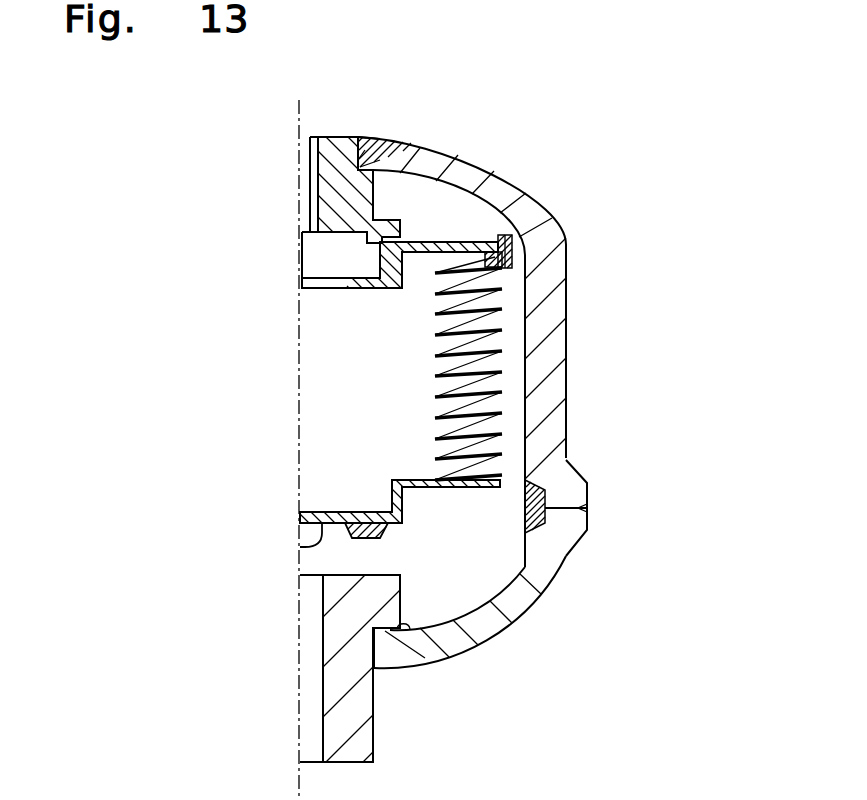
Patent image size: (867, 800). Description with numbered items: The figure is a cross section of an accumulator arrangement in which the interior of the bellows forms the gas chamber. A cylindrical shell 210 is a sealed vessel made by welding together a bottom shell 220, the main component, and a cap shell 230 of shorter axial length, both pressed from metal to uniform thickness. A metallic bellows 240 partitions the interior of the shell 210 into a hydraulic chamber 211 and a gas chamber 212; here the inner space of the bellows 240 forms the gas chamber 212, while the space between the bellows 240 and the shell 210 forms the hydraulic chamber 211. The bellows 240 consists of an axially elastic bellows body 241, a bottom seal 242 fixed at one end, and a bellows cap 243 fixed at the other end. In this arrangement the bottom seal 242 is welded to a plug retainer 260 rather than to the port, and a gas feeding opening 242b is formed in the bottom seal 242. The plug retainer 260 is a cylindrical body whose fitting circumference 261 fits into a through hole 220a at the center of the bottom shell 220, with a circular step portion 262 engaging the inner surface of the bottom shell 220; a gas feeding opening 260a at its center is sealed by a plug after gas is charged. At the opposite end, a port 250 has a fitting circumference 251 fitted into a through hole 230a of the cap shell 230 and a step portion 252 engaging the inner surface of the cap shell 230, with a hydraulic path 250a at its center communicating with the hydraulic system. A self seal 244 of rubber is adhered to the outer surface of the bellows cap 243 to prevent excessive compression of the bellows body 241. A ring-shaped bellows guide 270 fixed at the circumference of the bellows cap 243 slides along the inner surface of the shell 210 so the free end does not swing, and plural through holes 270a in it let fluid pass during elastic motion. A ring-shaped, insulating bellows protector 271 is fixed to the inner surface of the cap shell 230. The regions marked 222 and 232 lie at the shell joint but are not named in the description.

The shell 210 is at (571, 308).
The hydraulic chamber 211 is at (547, 587).
The gas chamber 212 is at (335, 418).
The bottom shell 220 is at (566, 380).
The through hole 220a is at (357, 136).
The upper shell flange 222 is at (587, 490).
The cap shell 230 is at (517, 625).
The through hole 230a is at (376, 632).
The lower shell flange 232 is at (587, 528).
The metallic bellows 240 is at (503, 410).
The bellows body 241 is at (503, 259).
The bottom seal 242 is at (457, 241).
The gas feeding opening 242b is at (327, 283).
The bellows cap 243 is at (547, 587).
The self seal 244 is at (305, 547).
The port 250 is at (374, 734).
The hydraulic path 250a is at (318, 717).
The fitting circumference 251 is at (375, 650).
The step portion 252 is at (412, 627).
The plug retainer 260 is at (375, 198).
The gas feeding opening 260a is at (305, 194).
The fitting circumference 261 is at (362, 165).
The step portion 262 is at (360, 166).
The bellows guide 270 is at (512, 236).
The through holes 270a is at (520, 256).
The bellows protector 271 is at (528, 490).